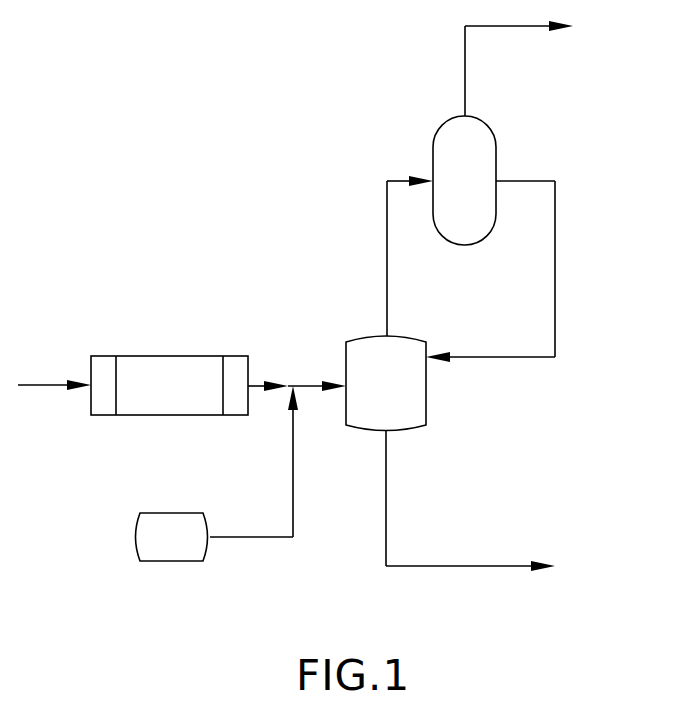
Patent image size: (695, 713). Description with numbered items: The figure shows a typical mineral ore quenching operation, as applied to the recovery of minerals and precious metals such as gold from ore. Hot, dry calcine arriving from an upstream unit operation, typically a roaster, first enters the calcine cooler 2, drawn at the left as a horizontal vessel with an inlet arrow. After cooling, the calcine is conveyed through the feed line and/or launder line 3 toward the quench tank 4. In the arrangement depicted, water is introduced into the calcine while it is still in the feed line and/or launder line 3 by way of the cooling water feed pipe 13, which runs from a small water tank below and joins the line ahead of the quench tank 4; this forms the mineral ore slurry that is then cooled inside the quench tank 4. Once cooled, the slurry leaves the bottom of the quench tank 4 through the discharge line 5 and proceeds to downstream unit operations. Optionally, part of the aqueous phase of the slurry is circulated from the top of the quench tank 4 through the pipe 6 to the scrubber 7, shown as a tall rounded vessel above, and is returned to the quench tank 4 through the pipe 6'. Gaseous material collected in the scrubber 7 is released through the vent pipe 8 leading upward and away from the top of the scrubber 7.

The calcine cooler 2 is at (185, 356).
The feed line and/or launder line 3 is at (287, 385).
The quench tank 4 is at (426, 400).
The discharge line 5 is at (458, 566).
The pipe 6 is at (370, 256).
The pipe 6' is at (531, 271).
The scrubber 7 is at (497, 128).
The vent pipe 8 is at (462, 56).
The cooling water feed pipe 13 is at (237, 537).